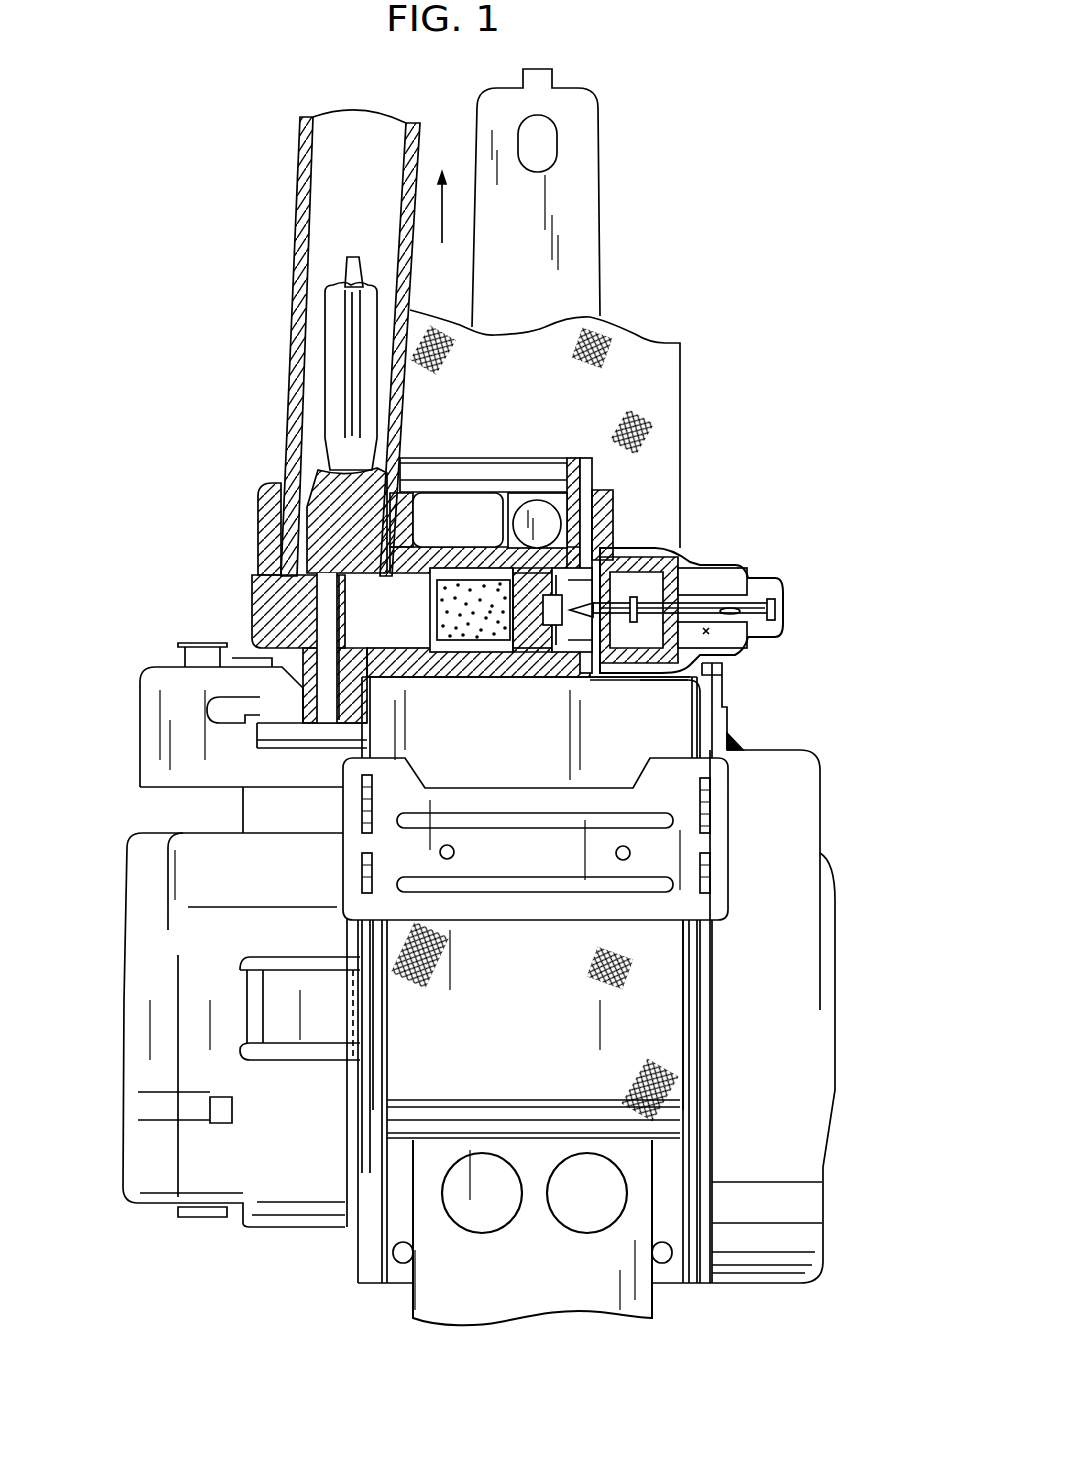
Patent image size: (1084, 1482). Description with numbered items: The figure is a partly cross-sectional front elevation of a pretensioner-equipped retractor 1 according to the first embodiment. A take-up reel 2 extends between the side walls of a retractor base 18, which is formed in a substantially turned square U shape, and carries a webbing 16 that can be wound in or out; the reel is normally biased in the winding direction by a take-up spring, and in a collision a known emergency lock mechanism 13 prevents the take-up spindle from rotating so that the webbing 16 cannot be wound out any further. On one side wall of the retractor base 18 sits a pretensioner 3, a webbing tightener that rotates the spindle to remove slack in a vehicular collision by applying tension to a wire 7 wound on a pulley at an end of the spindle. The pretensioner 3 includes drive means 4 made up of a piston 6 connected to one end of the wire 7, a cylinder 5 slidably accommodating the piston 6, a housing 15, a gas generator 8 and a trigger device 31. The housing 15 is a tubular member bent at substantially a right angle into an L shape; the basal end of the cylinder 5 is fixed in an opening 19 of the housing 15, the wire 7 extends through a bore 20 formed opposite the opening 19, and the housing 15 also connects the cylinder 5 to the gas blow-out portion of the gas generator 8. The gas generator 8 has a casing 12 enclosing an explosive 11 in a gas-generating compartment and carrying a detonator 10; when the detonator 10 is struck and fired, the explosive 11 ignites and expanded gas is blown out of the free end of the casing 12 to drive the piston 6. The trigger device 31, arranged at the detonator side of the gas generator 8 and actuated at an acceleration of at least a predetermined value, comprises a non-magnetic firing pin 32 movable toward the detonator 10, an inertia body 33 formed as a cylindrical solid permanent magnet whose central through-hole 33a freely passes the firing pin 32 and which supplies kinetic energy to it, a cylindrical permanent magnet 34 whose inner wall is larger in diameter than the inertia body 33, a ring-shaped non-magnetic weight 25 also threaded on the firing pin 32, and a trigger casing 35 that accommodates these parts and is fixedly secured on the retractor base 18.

The pretensioner-equipped retractor 1 is at (688, 260).
The take-up reel 2 is at (380, 1172).
The pretensioner 3 is at (285, 1138).
The drive means 4 is at (469, 443).
The cylinder 5 is at (302, 178).
The piston 6 is at (328, 356).
The wire 7 is at (327, 618).
The gas generator 8 is at (456, 556).
The detonator 10 is at (548, 595).
The explosive 11 is at (447, 633).
The casing 12 is at (490, 570).
The emergency lock mechanism 13 is at (785, 1033).
The housing 15 is at (258, 593).
The webbing 16 is at (665, 377).
The retractor base 18 is at (680, 1265).
The opening 19 is at (275, 493).
The bore 20 is at (343, 633).
The weight 25 is at (757, 583).
The trigger device 31 is at (721, 556).
The firing pin 32 is at (722, 673).
The inertia body 33 is at (715, 640).
The through-hole 33a is at (777, 632).
The cylindrical permanent magnet 34 is at (636, 556).
The trigger casing 35 is at (772, 583).